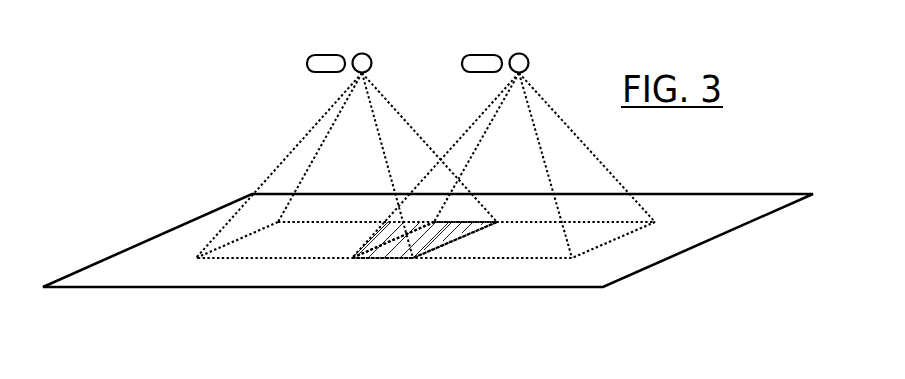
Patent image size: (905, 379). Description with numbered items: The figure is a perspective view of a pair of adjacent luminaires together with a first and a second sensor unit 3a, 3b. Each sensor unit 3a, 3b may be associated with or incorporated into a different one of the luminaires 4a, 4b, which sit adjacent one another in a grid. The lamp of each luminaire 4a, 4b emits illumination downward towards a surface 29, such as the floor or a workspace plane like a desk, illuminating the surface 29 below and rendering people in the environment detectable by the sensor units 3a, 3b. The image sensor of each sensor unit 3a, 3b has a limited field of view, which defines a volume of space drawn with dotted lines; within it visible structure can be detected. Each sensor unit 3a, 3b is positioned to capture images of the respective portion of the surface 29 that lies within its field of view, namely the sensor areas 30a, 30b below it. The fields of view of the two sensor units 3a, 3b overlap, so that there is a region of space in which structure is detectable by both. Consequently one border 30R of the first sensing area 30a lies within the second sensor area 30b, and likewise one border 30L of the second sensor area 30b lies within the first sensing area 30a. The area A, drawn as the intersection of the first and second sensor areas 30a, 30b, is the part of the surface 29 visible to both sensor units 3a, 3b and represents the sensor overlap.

The surface 29 is at (118, 268).
The sensor area of the first sensor unit 30a is at (243, 260).
The sensor area of the second sensor unit 30b is at (490, 260).
The area of sensor overlap A is at (397, 250).
The border of the second sensor area 30L is at (396, 238).
The border of the first sensor area 30R is at (458, 240).
The first sensor unit 3a is at (363, 53).
The second sensor unit 3b is at (520, 53).
The first luminaire 4a is at (325, 55).
The second luminaire 4b is at (482, 55).